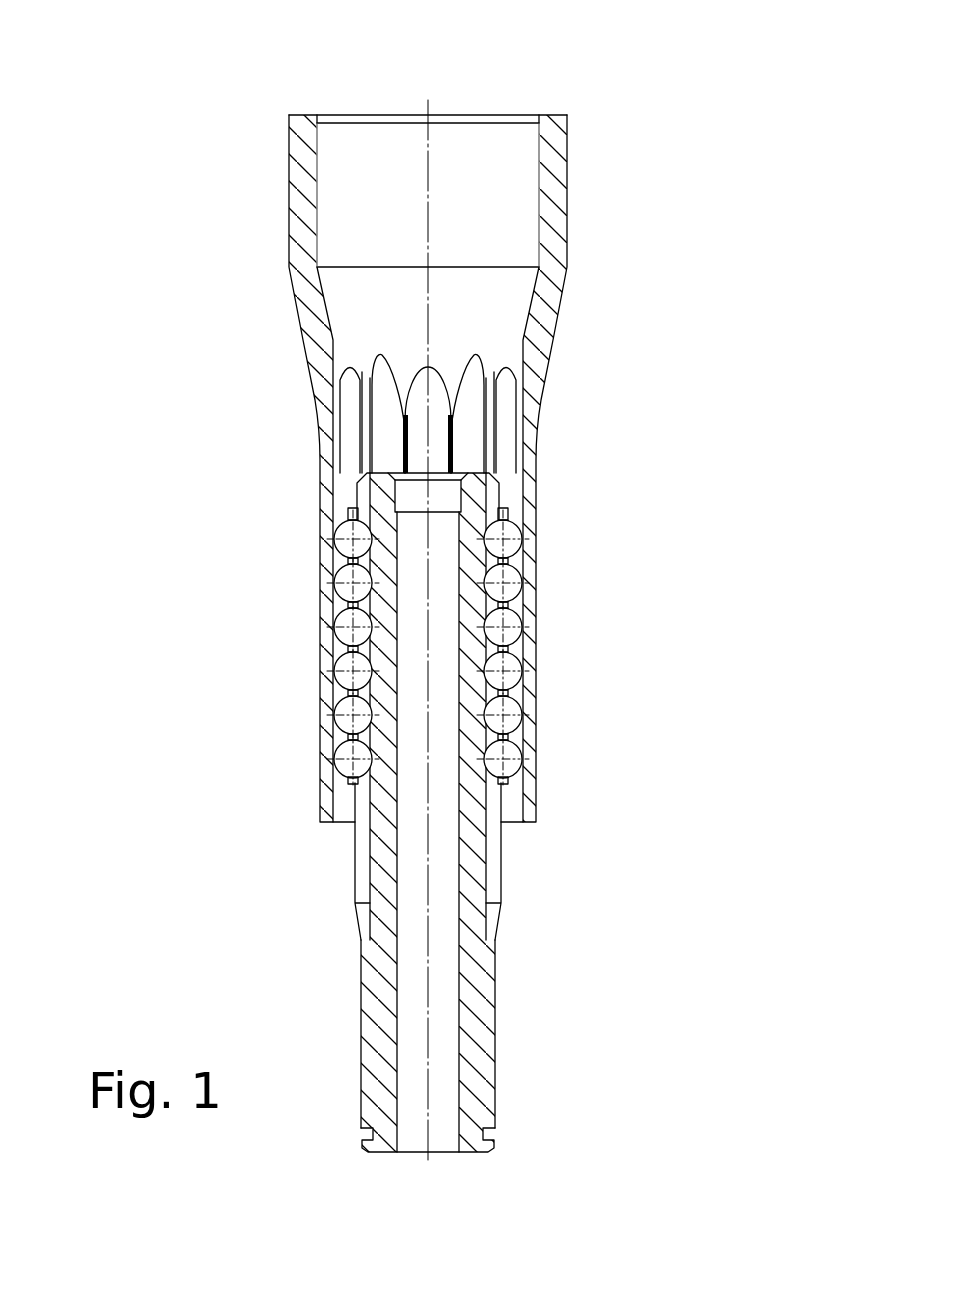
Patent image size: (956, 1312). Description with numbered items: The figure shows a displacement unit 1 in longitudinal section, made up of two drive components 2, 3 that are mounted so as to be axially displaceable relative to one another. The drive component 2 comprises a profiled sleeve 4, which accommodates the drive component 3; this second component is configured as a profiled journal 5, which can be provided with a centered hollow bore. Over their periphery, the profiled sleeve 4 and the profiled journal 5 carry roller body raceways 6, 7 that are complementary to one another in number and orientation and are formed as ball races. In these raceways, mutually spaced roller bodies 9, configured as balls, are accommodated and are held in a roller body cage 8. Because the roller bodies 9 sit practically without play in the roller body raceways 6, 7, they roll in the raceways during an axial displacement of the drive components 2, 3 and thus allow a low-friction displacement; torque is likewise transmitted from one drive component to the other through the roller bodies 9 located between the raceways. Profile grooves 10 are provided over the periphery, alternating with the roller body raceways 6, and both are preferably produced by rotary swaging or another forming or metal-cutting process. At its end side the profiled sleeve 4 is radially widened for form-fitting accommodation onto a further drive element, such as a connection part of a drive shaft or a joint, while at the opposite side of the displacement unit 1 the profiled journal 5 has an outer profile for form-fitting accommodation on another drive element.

The displacement unit 1 is at (716, 91).
The drive component 2 is at (586, 285).
The drive component 3 is at (512, 998).
The profiled sleeve 4 is at (557, 238).
The profiled journal 5 is at (488, 1048).
The roller body raceway 6 is at (430, 422).
The roller body raceway 7 is at (360, 846).
The roller body cage 8 is at (352, 606).
The roller bodies 9 is at (352, 540).
The profile grooves 10 is at (472, 431).